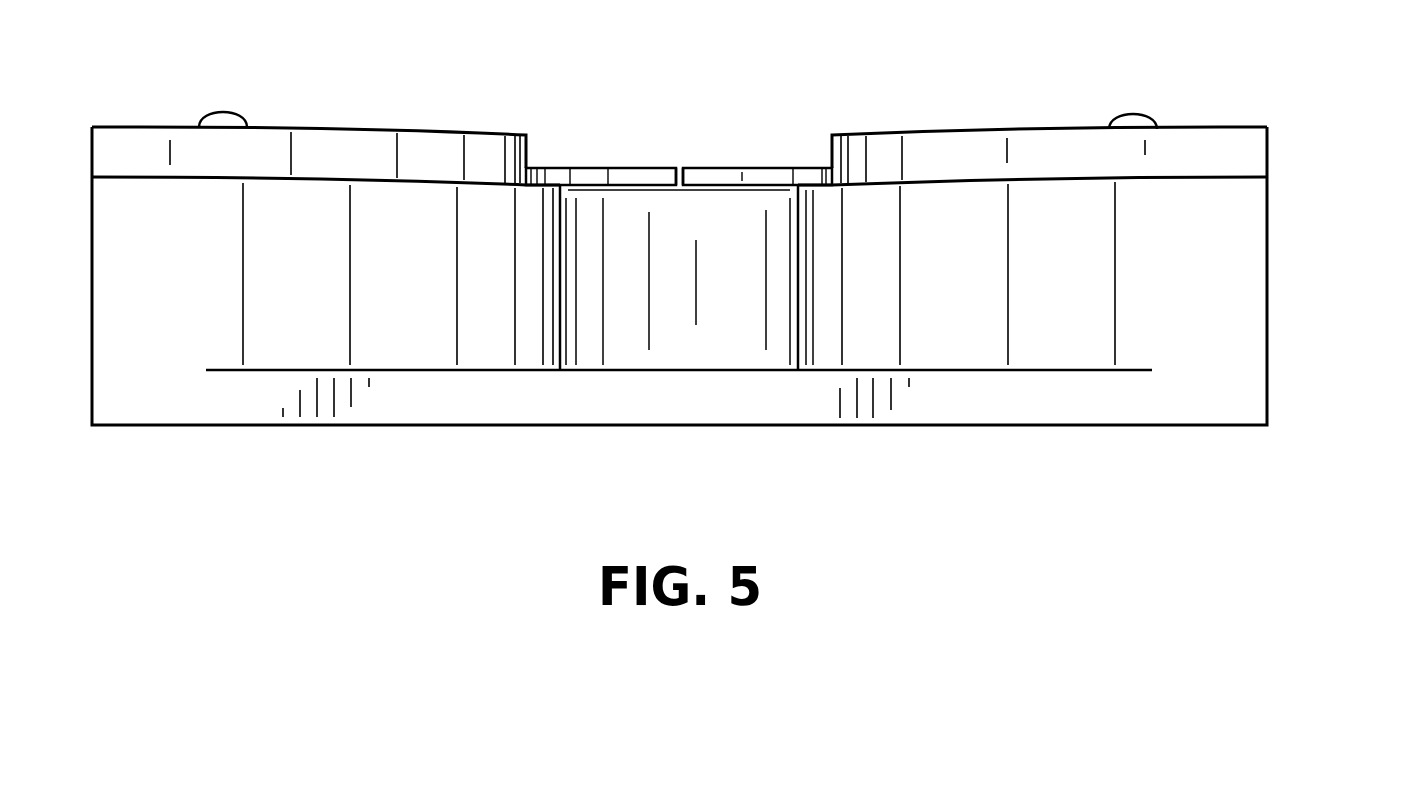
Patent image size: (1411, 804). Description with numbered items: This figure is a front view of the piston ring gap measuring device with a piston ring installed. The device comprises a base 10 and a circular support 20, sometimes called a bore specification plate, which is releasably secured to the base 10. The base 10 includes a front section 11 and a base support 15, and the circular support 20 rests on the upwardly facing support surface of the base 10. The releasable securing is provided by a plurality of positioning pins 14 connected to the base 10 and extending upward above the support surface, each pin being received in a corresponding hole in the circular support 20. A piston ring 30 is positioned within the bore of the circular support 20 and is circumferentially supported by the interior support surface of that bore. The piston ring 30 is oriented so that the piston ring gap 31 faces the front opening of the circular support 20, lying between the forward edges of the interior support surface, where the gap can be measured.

The base 10 is at (1267, 268).
The front section 11 is at (1143, 308).
The positioning pins 14 is at (245, 113).
The base support 15 is at (706, 372).
The circular support 20 is at (1237, 143).
The piston ring 30 is at (715, 166).
The piston ring gap 31 is at (677, 160).